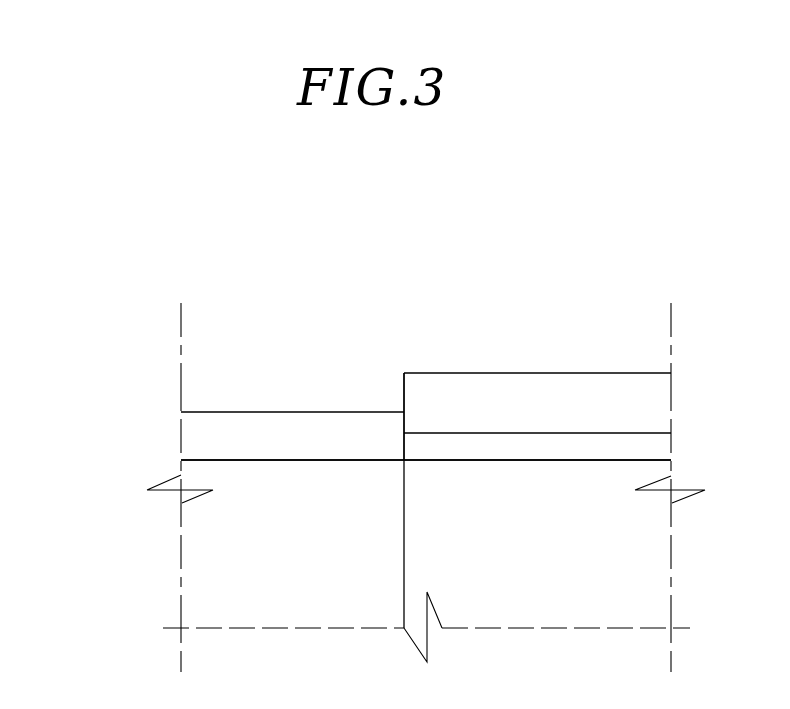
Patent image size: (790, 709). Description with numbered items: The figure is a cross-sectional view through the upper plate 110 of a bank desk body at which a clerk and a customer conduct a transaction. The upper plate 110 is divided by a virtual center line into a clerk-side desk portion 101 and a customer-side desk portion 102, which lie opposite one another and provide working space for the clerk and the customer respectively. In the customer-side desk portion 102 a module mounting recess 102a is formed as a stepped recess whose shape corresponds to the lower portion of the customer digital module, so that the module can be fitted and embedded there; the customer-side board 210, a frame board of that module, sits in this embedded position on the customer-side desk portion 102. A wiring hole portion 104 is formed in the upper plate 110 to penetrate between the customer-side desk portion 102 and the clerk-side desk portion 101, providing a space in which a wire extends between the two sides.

The upper plate 110 is at (371, 517).
The clerk-side desk portion 101 is at (420, 578).
The customer-side desk portion 102 is at (206, 532).
The module mounting recess 102a is at (404, 390).
The wiring hole portion 104 is at (557, 432).
The customer-side board 210 is at (234, 412).